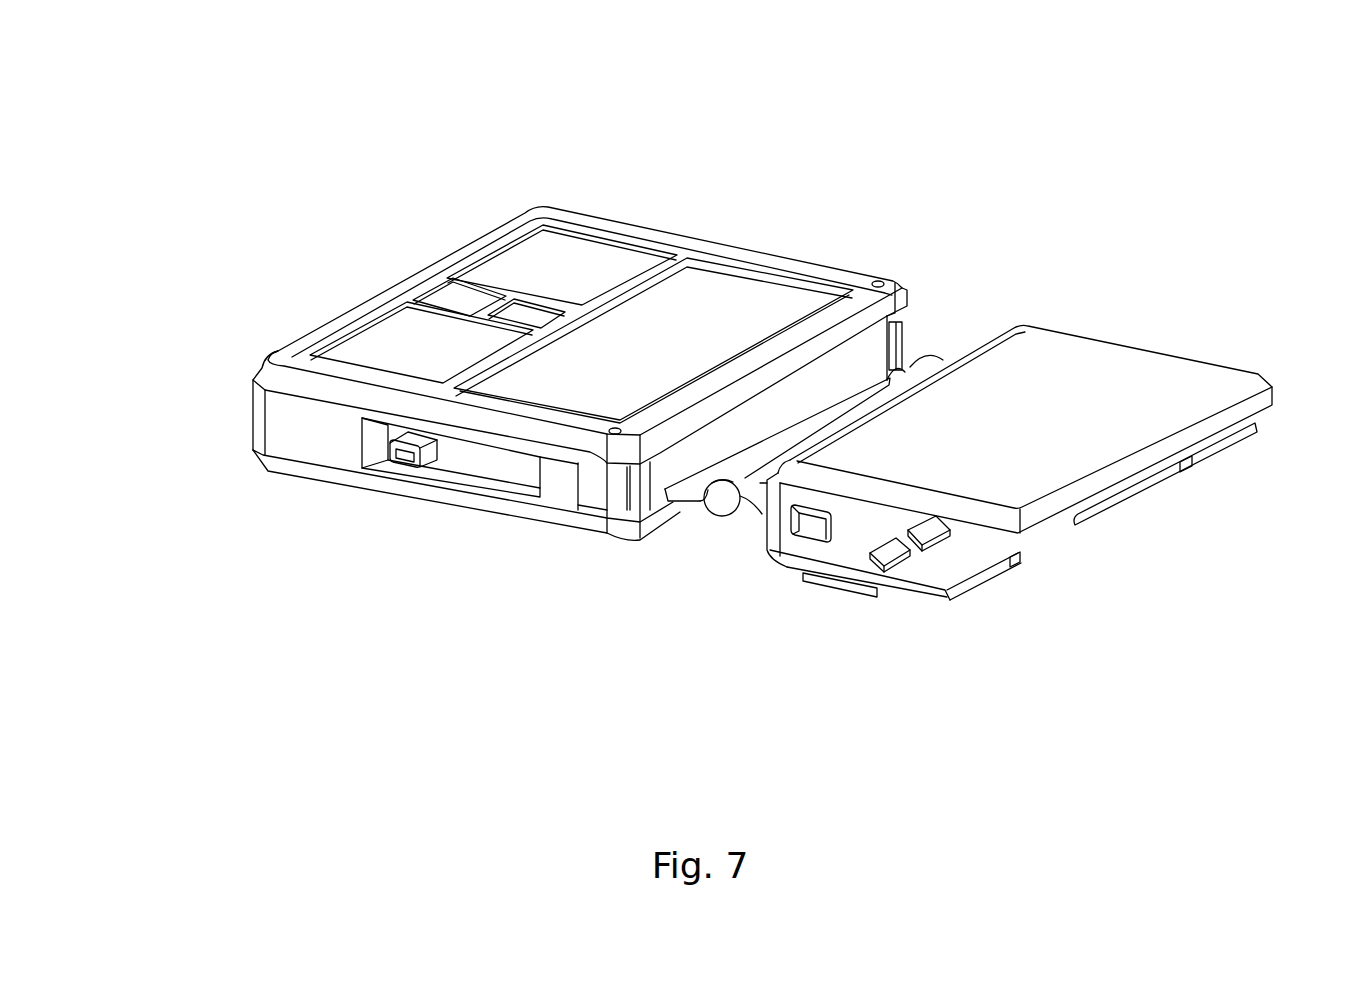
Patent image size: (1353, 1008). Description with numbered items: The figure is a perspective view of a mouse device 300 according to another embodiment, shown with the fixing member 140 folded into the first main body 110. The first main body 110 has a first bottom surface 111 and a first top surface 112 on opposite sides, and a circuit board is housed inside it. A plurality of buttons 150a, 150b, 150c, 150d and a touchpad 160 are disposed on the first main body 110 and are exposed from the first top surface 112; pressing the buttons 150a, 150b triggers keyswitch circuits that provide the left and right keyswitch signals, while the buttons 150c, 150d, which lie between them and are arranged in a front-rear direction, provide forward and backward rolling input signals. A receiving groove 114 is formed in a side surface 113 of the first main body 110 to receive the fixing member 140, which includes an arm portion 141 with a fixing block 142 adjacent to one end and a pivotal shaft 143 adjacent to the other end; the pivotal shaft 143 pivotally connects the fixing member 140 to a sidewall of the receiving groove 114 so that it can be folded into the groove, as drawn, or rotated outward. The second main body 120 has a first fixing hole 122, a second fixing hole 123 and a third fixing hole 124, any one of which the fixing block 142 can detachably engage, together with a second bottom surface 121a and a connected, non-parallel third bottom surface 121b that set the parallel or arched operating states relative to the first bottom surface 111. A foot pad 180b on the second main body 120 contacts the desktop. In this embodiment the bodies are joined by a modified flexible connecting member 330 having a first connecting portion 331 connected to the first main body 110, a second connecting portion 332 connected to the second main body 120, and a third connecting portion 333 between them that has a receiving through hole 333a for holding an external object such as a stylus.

The mouse device 300 is at (222, 61).
The first main body 110 is at (236, 265).
The first bottom surface 111 is at (300, 485).
The first top surface 112 is at (290, 360).
The side surface 113 is at (280, 436).
The receiving groove 114 is at (379, 463).
The second main body 120 is at (1067, 357).
The second bottom surface 121a is at (912, 597).
The third bottom surface 121b is at (1100, 507).
The first fixing hole 122 is at (790, 542).
The second fixing hole 123 is at (867, 572).
The third fixing hole 124 is at (939, 560).
The fixing member 140 is at (588, 598).
The arm portion 141 is at (493, 472).
The fixing block 142 is at (404, 470).
The pivotal shaft 143 is at (612, 503).
The button 150a is at (390, 337).
The button 150b is at (540, 248).
The button 150c is at (440, 297).
The button 150d is at (523, 307).
The touchpad 160 is at (727, 292).
The foot pad 180b is at (823, 575).
The flexible connecting member 330 is at (548, 665).
The first connecting portion 331 is at (689, 500).
The second connecting portion 332 is at (752, 515).
The third connecting portion 333 is at (719, 515).
The receiving through hole 333a is at (731, 480).